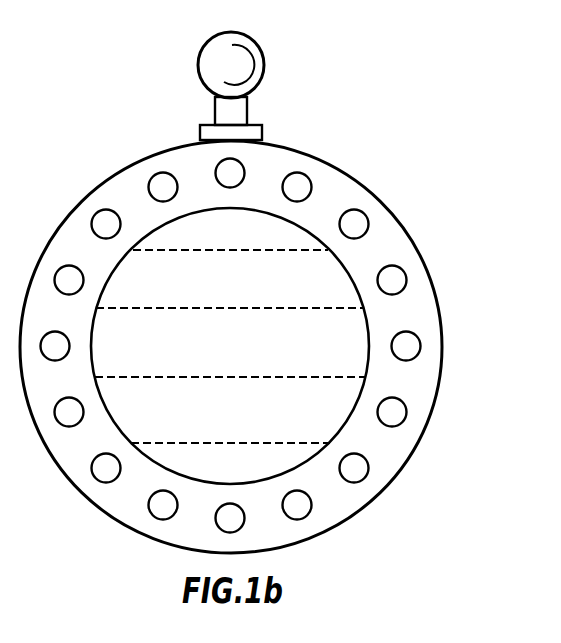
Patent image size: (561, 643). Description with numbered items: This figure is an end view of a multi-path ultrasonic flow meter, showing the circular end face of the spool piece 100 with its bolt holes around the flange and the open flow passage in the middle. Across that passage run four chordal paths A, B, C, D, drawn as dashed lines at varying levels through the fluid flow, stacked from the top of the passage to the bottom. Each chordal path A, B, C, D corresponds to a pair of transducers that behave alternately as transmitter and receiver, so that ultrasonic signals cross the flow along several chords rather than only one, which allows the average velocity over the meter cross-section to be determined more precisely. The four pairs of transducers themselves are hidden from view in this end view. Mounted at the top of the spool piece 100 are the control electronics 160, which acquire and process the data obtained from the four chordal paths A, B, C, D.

The spool piece 100 is at (397, 210).
The control electronics 160 is at (265, 68).
The chordal path A is at (230, 234).
The chordal path B is at (230, 295).
The chordal path C is at (230, 392).
The chordal path D is at (230, 459).